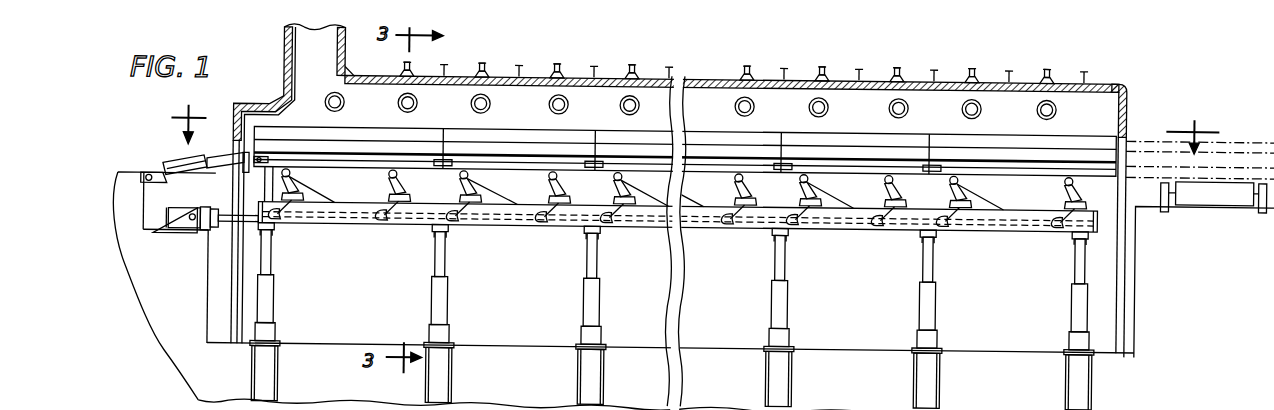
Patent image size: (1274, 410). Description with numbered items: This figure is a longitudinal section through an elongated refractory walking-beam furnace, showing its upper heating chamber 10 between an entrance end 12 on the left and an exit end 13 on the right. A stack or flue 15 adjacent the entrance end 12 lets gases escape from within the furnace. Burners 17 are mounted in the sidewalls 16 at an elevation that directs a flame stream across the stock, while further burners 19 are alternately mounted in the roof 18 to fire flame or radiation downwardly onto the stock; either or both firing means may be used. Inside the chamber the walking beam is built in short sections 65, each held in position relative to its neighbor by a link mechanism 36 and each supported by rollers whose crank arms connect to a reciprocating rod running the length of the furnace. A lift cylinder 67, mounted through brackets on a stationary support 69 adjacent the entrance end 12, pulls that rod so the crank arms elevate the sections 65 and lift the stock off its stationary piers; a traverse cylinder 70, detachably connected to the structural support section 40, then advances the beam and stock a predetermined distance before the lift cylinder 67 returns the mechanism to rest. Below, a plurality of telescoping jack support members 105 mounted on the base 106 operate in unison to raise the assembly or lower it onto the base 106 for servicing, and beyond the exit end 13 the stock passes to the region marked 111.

The upper heating chamber 10 is at (538, 97).
The entrance end 12 is at (218, 151).
The exit end 13 is at (1164, 119).
The stack or flue 15 is at (350, 66).
The sidewalls 16 is at (524, 118).
The burners 17 is at (343, 106).
The roof 18 is at (608, 79).
The burners 19 is at (408, 68).
The link mechanism 36 is at (441, 170).
The structural support section 40 is at (363, 166).
The section of the walking beam 65 is at (332, 147).
The lift cylinder 67 is at (206, 217).
The stationary support 69 is at (181, 287).
The traverse cylinder 70 is at (177, 181).
The support members 105 is at (276, 294).
The base 106 is at (855, 391).
The exit conveyor 111 is at (1222, 291).